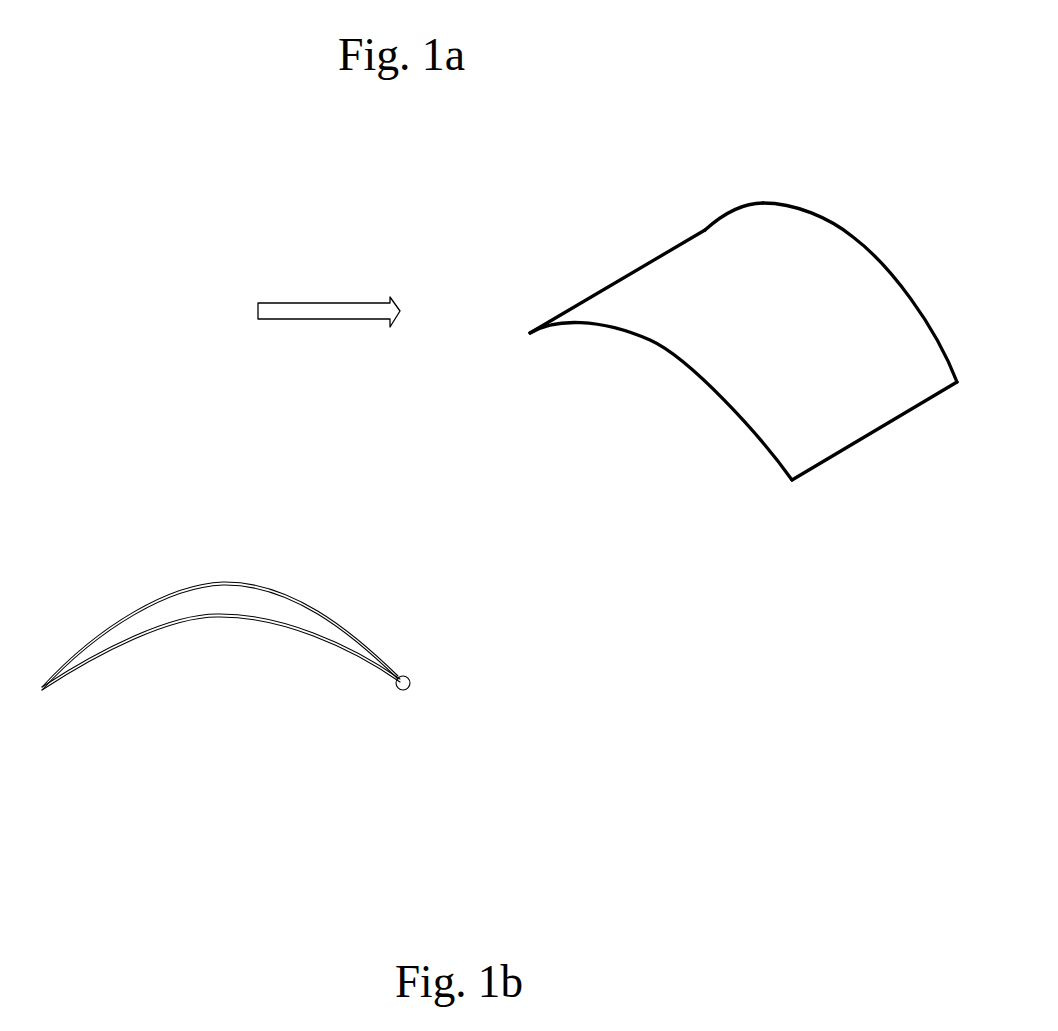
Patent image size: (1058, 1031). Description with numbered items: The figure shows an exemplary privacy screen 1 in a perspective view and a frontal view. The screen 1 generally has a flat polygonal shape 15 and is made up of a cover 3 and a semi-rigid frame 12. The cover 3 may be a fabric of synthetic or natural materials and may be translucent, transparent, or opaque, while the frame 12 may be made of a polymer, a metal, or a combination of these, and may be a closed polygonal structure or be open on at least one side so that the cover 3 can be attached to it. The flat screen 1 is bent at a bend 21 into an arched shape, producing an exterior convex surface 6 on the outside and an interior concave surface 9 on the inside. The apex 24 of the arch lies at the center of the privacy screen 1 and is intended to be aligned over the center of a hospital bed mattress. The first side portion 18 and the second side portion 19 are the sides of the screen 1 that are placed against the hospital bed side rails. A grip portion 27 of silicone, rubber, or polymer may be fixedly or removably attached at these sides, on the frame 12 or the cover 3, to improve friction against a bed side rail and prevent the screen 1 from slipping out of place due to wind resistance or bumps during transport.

In FIG. 1A, the screen 1 is at (291, 303).
In FIG. 1A, the cover 3 is at (703, 375).
In FIG. 1A, the bend 21 is at (680, 322).
In FIG. 1A, the second side portion 19 is at (682, 262).
In FIG. 1A, the polygonal shape 15 is at (780, 312).
In FIG. 1A, the first side portion 18 is at (858, 442).
In FIG. 1A, the frame 12 is at (687, 368).
In FIG. 1B, the exterior convex surface 6 is at (221, 609).
In FIG. 1B, the apex 24 is at (267, 588).
In FIG. 1B, the interior concave surface 9 is at (193, 618).
In FIG. 1B, the grip portion 27 is at (412, 675).